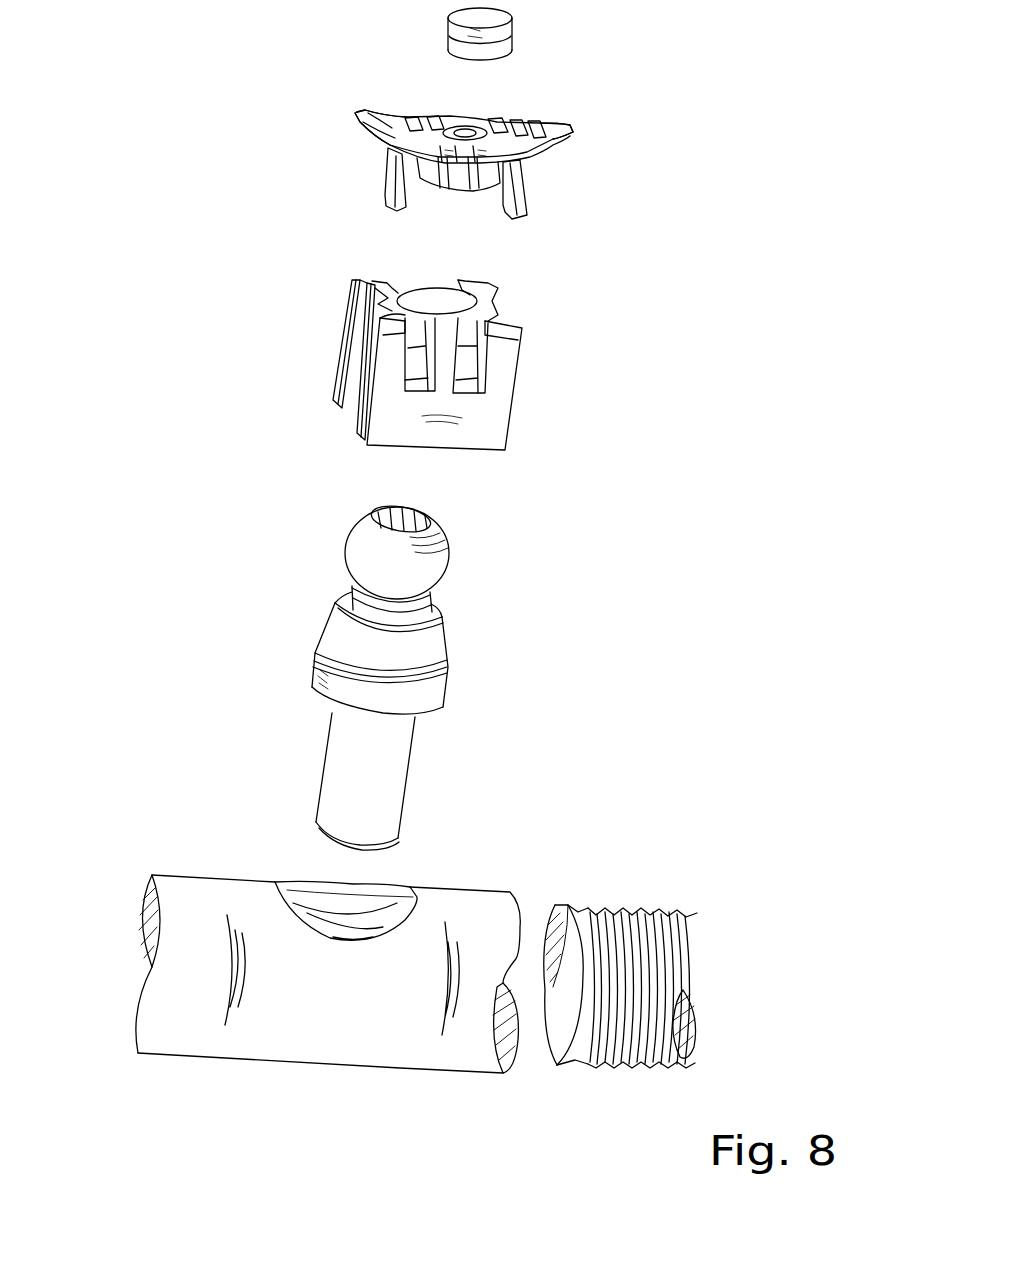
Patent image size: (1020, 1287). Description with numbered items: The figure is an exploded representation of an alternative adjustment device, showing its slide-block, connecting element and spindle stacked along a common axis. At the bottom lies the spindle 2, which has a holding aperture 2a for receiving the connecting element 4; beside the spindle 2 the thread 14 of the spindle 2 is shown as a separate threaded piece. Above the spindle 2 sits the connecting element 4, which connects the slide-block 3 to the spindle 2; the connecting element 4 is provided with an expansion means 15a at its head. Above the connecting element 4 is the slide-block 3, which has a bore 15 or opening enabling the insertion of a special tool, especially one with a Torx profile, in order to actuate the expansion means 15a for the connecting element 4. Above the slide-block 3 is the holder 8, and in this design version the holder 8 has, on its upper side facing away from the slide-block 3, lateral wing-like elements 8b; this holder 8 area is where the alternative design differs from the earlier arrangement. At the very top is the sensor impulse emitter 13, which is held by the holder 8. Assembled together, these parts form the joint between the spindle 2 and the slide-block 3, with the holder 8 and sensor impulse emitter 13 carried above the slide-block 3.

The sensor impulse emitter 13 is at (517, 33).
The holder 8 is at (547, 170).
The wing-like elements 8b is at (570, 123).
The bore 15 is at (448, 302).
The slide-block 3 is at (505, 375).
The expansion means 15a is at (430, 517).
The connecting element 4 is at (418, 660).
The spindle 2 is at (477, 907).
The holding aperture 2a is at (322, 889).
The thread 14 is at (637, 903).